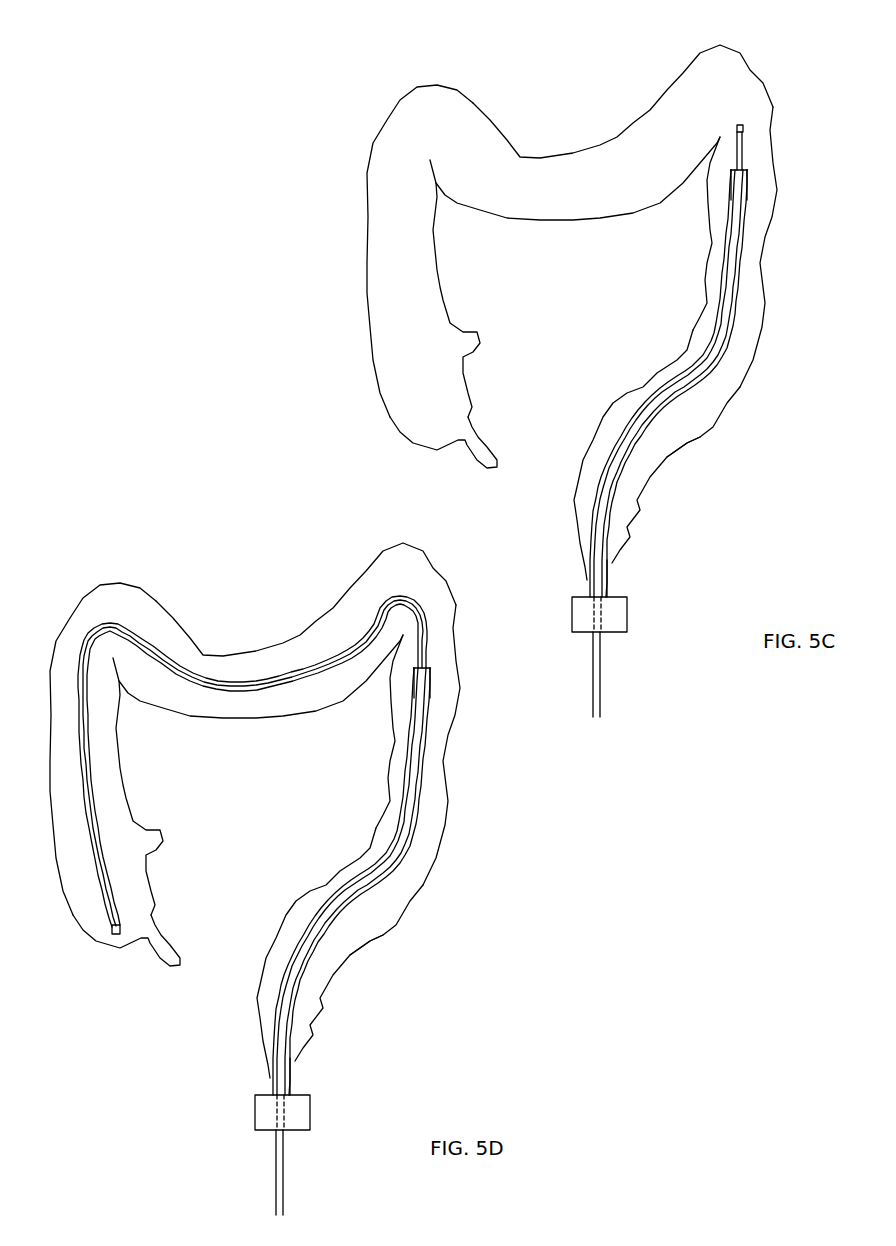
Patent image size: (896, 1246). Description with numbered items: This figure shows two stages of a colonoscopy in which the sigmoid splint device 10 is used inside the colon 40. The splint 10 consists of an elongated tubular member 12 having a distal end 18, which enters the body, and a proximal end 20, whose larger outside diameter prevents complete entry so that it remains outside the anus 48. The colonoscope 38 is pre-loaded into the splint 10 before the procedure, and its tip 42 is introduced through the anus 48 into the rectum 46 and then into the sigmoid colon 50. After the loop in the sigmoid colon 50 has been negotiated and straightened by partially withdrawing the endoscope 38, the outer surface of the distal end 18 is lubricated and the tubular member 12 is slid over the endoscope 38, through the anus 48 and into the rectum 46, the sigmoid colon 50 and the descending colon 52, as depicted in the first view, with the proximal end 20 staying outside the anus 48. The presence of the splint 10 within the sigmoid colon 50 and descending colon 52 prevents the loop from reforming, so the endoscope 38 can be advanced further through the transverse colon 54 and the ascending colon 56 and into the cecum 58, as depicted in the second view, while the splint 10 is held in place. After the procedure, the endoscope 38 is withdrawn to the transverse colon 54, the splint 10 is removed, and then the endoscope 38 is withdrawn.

In FIG. 5C, the sigmoid splint device 10 is at (753, 312).
In FIG. 5D, the sigmoid splint device 10 is at (393, 873).
In FIG. 5C, the elongated tubular member 12 is at (748, 250).
In FIG. 5D, the elongated tubular member 12 is at (389, 881).
In FIG. 5C, the distal end 18 is at (753, 178).
In FIG. 5D, the distal end 18 is at (464, 675).
In FIG. 5C, the proximal end 20 is at (633, 614).
In FIG. 5D, the proximal end 20 is at (326, 1110).
In FIG. 5C, the colonoscope 38 is at (608, 690).
In FIG. 5D, the colonoscope 38 is at (291, 1188).
In FIG. 5C, the colon 40 is at (523, 133).
In FIG. 5D, the colon 40 is at (255, 810).
In FIG. 5C, the tip 42 is at (745, 128).
In FIG. 5D, the tip 42 is at (114, 934).
In FIG. 5C, the rectum 46 is at (595, 463).
In FIG. 5D, the rectum 46 is at (304, 953).
In FIG. 5C, the anus 48 is at (608, 580).
In FIG. 5D, the anus 48 is at (326, 1074).
In FIG. 5C, the sigmoid colon 50 is at (688, 412).
In FIG. 5D, the sigmoid colon 50 is at (378, 900).
In FIG. 5C, the descending colon 52 is at (714, 243).
In FIG. 5D, the descending colon 52 is at (395, 745).
In FIG. 5C, the transverse colon 54 is at (565, 170).
In FIG. 5D, the transverse colon 54 is at (284, 630).
In FIG. 5C, the ascending colon 56 is at (430, 300).
In FIG. 5D, the ascending colon 56 is at (115, 749).
In FIG. 5C, the cecum 58 is at (455, 393).
In FIG. 5D, the cecum 58 is at (138, 910).